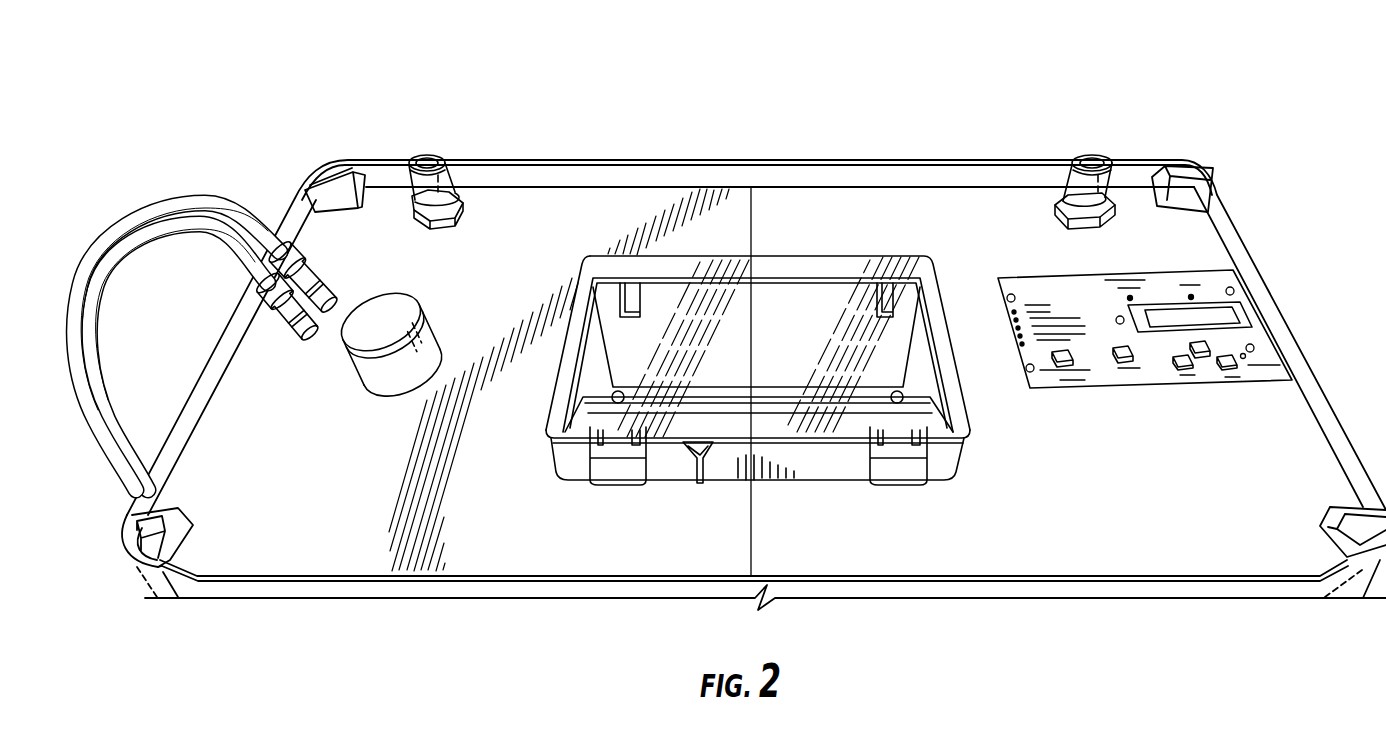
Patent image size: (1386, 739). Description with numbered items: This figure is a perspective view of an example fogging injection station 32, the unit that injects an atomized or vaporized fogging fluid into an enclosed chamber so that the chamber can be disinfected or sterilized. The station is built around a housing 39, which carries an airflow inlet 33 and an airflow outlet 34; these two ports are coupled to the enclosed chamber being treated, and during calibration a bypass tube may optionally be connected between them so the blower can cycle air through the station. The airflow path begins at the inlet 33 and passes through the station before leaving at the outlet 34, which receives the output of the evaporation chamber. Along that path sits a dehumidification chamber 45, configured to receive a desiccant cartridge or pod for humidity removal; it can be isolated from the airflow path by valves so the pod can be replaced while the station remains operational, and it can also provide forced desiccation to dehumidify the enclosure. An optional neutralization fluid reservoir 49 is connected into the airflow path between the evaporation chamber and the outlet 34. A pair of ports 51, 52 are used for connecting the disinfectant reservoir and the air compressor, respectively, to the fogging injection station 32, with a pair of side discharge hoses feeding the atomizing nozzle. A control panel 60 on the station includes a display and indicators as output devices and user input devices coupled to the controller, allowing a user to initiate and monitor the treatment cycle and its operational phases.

The fogging injection station 32 is at (1234, 112).
The inlet 33 is at (1093, 163).
The outlet 34 is at (429, 164).
The housing 39 is at (655, 165).
The dehumidification chamber 45 is at (909, 244).
The neutralization fluid reservoir 49 is at (423, 357).
The port 51 is at (313, 278).
The port 52 is at (282, 322).
The control panel 60 is at (1204, 260).